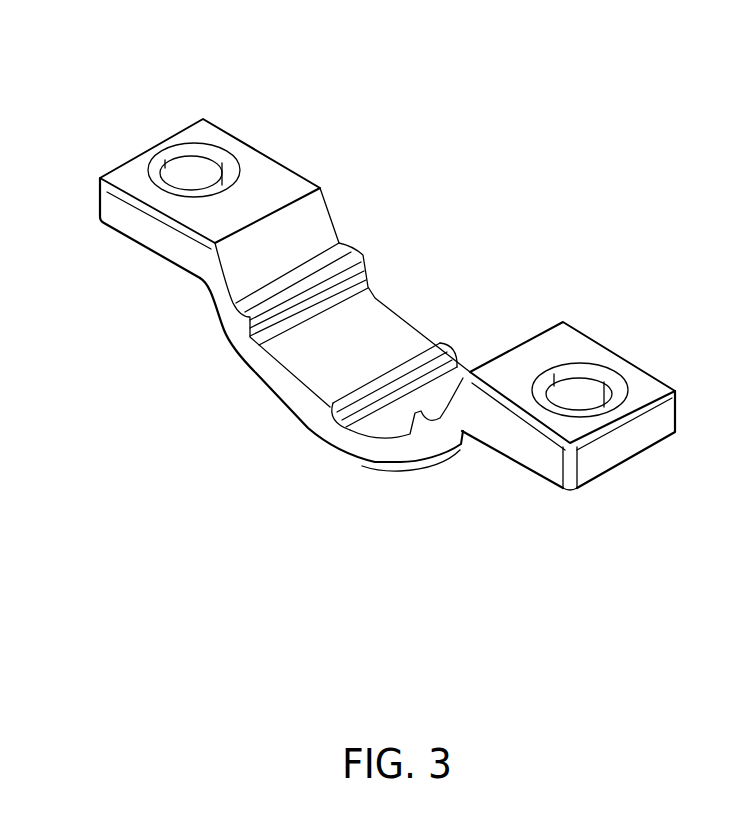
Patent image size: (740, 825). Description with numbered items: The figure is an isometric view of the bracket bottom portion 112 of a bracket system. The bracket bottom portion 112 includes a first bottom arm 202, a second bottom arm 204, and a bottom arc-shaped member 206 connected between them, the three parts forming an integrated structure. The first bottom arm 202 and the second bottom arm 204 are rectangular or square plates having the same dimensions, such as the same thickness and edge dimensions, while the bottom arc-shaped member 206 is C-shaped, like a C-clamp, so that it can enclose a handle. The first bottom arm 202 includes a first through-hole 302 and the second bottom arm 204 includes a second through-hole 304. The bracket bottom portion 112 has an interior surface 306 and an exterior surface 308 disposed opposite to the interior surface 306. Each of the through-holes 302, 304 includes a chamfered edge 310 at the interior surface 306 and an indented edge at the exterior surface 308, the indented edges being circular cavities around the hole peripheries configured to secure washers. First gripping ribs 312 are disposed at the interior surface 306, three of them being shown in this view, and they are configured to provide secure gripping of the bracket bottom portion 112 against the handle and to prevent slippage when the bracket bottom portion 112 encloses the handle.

The bracket bottom portion 112 is at (451, 194).
The first bottom arm 202 is at (602, 457).
The second bottom arm 204 is at (127, 213).
The bottom arc-shaped member 206 is at (373, 450).
The first through-hole 302 is at (573, 390).
The second through-hole 304 is at (203, 168).
The interior surface 306 is at (313, 220).
The exterior surface 308 is at (250, 373).
The chamfered edge 310 is at (163, 166).
The first gripping ribs 312 is at (433, 343).